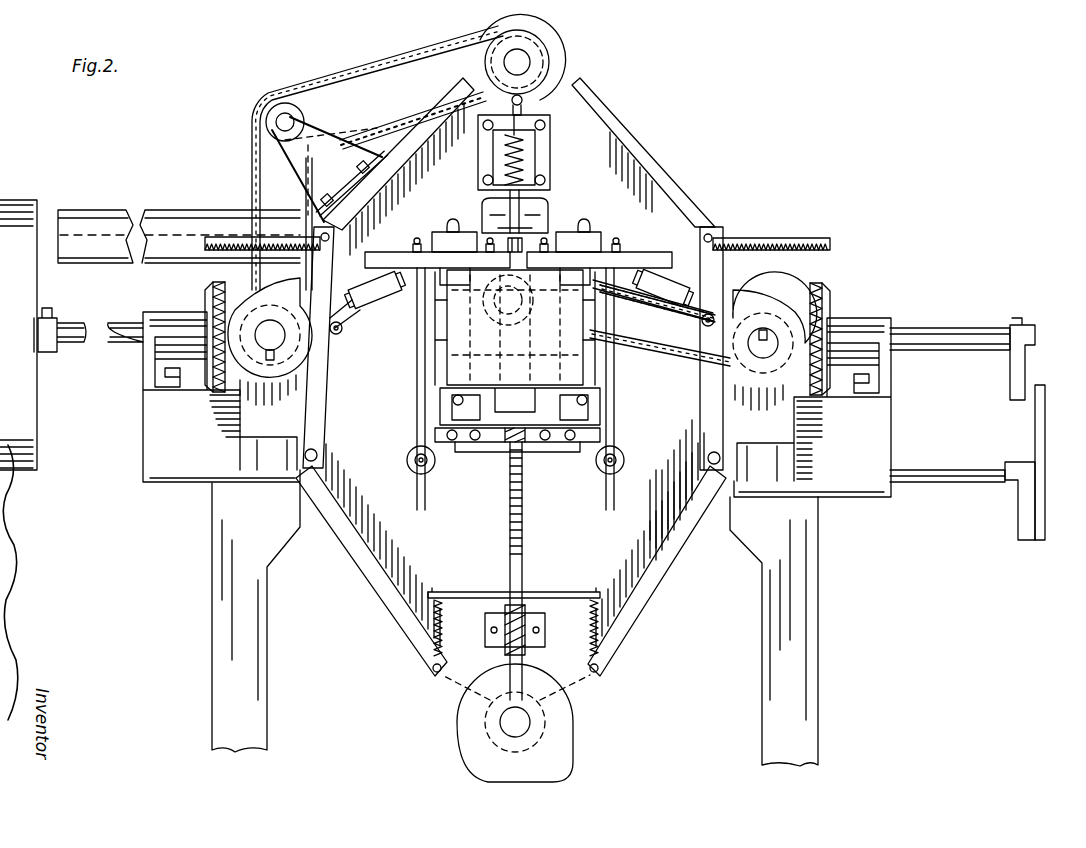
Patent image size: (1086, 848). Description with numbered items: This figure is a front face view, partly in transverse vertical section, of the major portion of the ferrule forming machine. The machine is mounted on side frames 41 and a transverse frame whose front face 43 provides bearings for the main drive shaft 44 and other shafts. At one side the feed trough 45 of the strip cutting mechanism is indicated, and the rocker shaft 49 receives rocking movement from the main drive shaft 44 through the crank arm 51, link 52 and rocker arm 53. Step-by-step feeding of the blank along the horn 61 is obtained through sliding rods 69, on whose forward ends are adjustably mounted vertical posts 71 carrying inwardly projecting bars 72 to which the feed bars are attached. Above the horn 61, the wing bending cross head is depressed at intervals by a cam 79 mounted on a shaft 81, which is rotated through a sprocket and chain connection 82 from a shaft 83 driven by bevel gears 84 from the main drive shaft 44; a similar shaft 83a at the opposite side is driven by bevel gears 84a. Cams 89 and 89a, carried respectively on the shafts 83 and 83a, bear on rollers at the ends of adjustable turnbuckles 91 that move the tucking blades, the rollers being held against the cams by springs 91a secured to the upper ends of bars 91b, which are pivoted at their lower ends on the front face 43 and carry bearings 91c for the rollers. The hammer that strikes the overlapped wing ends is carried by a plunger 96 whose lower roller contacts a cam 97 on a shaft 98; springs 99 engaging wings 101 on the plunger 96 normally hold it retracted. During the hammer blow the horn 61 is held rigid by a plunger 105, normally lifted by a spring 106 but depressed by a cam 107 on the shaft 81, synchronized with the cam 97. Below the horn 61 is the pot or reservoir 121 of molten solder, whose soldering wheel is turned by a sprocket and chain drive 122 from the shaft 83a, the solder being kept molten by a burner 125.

The side frames 41 is at (515, 624).
The front face 43 is at (511, 377).
The main drive shaft 44 is at (120, 352).
The feed trough 45 is at (96, 210).
The rocker shaft 49 is at (946, 470).
The crank arm 51 is at (1024, 380).
The link 52 is at (1044, 452).
The rocker arm 53 is at (1018, 517).
The horn 61 is at (524, 250).
The sliding rods 69 is at (406, 461).
The vertical posts 71 is at (416, 368).
The bars 72 is at (392, 254).
The cam 79 is at (537, 32).
The shaft 81 is at (517, 62).
The sprocket and chain connection 82 is at (375, 62).
The shaft 83 is at (270, 335).
The shaft 83a is at (763, 343).
The bevel gears 84 is at (207, 296).
The bevel gears 84a is at (833, 297).
The cam 89 is at (270, 341).
The cam 89a is at (775, 341).
The adjustable turnbuckles 91 is at (370, 306).
The springs 91a is at (280, 238).
The bars 91b is at (318, 392).
The bearings 91c is at (338, 338).
The plunger 96 is at (528, 608).
The cam 97 is at (516, 723).
The shaft 98 is at (515, 722).
The springs 99 is at (591, 635).
The wings 101 is at (462, 592).
The plunger 105 is at (552, 203).
The spring 106 is at (552, 168).
The cam 107 is at (552, 62).
The pot or reservoir 121 is at (492, 340).
The sprocket and chain drive 122 is at (690, 354).
The burner 125 is at (482, 444).